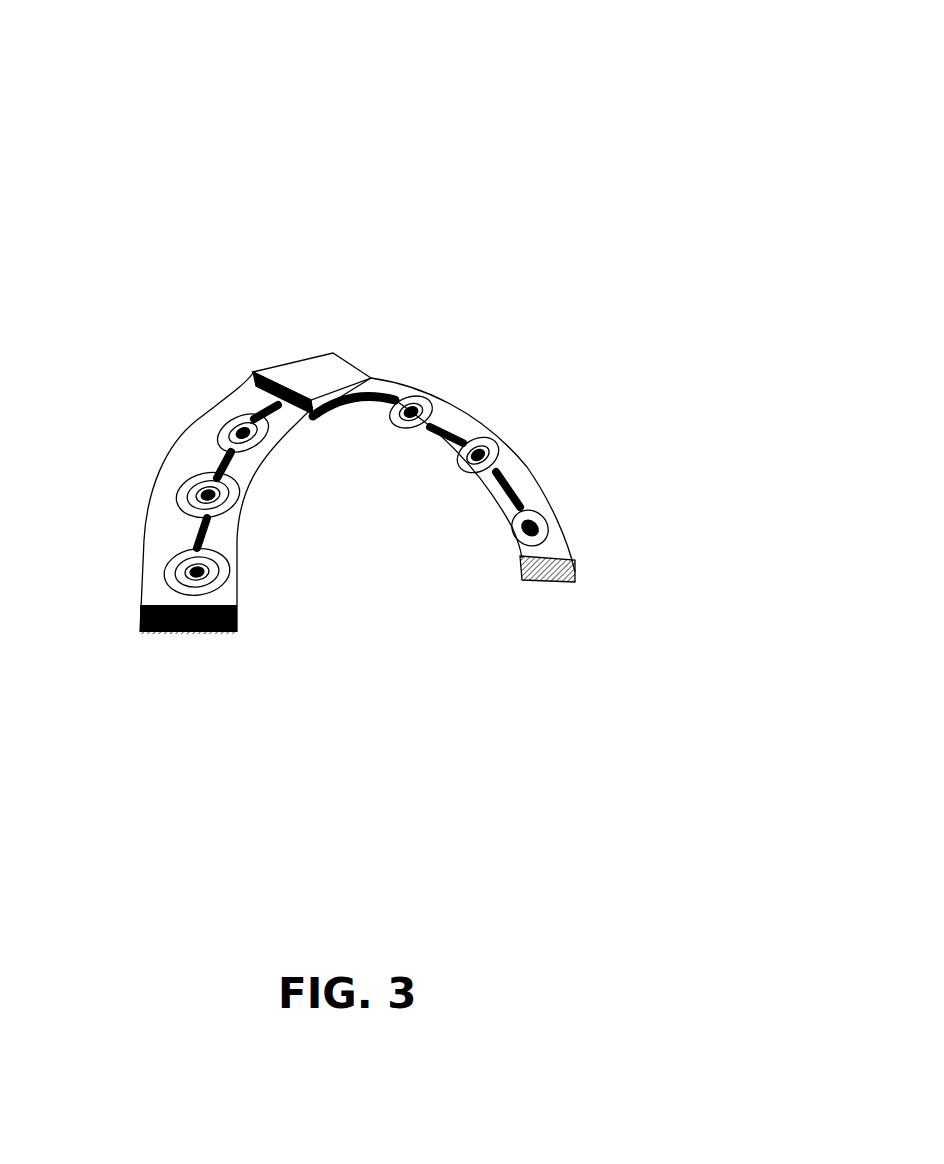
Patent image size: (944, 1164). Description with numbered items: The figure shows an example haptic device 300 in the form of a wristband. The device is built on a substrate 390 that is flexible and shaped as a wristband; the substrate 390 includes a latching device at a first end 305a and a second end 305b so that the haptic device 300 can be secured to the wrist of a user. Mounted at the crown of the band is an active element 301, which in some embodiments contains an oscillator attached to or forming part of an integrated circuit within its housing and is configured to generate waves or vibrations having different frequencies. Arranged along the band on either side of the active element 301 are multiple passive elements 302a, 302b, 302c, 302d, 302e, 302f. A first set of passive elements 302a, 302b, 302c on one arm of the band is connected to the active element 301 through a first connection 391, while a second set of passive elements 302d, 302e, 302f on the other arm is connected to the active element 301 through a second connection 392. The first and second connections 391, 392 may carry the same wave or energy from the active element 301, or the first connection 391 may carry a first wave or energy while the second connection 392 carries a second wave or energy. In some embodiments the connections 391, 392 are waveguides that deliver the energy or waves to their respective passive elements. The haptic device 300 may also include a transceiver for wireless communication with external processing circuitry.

The haptic device 300 is at (513, 78).
The active element 301 is at (325, 367).
The passive element 302a is at (197, 585).
The passive element 302b is at (210, 500).
The passive element 302c is at (247, 437).
The passive element 302d is at (427, 413).
The passive element 302e is at (487, 452).
The passive element 302f is at (540, 533).
The first end 305a is at (210, 633).
The second end 305b is at (550, 588).
The substrate 390 is at (547, 545).
The first connection 391 is at (220, 461).
The second connection 392 is at (393, 404).